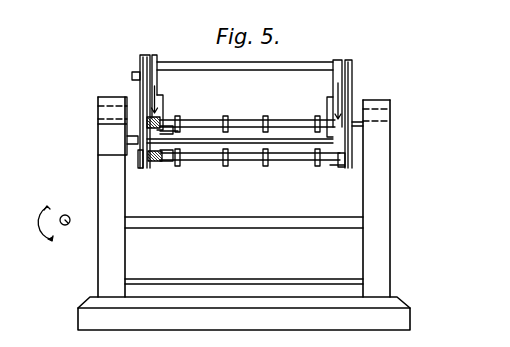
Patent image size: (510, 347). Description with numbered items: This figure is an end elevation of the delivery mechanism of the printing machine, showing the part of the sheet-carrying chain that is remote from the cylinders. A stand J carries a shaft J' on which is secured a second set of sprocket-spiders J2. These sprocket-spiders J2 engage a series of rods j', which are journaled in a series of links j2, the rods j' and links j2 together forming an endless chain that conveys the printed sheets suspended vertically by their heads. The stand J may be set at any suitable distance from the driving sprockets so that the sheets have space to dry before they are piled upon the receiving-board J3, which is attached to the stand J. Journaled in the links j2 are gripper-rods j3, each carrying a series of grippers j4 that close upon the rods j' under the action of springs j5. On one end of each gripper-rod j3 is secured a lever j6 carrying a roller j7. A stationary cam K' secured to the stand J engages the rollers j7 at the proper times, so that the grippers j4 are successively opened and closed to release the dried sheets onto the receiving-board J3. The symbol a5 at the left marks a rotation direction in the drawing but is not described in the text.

The stand J is at (244, 213).
The shaft J' is at (283, 92).
The sprocket-spiders J2 is at (152, 80).
The receiving-board J3 is at (230, 220).
The rods j' is at (247, 145).
The links j2 is at (146, 56).
The gripper-rods j3 is at (215, 121).
The grippers j4 is at (176, 146).
The springs j5 is at (140, 125).
The levers j6 is at (207, 156).
The roller j7 is at (132, 140).
The cam K' is at (112, 126).
The axis of rotation a5 is at (59, 223).